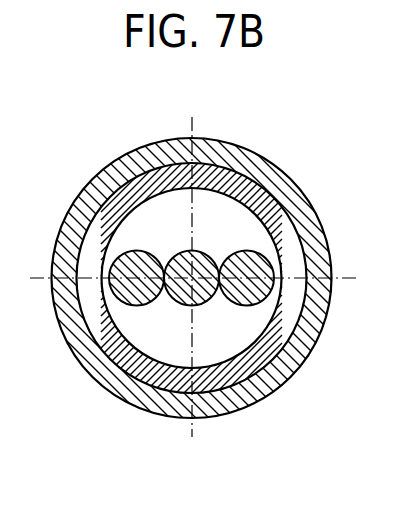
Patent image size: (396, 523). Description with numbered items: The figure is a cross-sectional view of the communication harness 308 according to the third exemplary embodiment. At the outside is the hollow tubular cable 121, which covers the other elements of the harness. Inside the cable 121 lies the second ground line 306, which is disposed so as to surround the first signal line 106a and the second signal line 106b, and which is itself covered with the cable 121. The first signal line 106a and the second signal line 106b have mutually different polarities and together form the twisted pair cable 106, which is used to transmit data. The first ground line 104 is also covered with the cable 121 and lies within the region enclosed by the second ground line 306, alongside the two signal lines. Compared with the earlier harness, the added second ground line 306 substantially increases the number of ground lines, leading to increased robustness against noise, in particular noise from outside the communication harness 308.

The communication harness 308 is at (62, 179).
The second ground line 306 is at (157, 182).
The first ground line 104 is at (198, 250).
The hollow tubular cable 121 is at (305, 195).
The first signal line 106a is at (137, 306).
The second signal line 106b is at (243, 306).
The twisted pair cable 106 is at (171, 298).